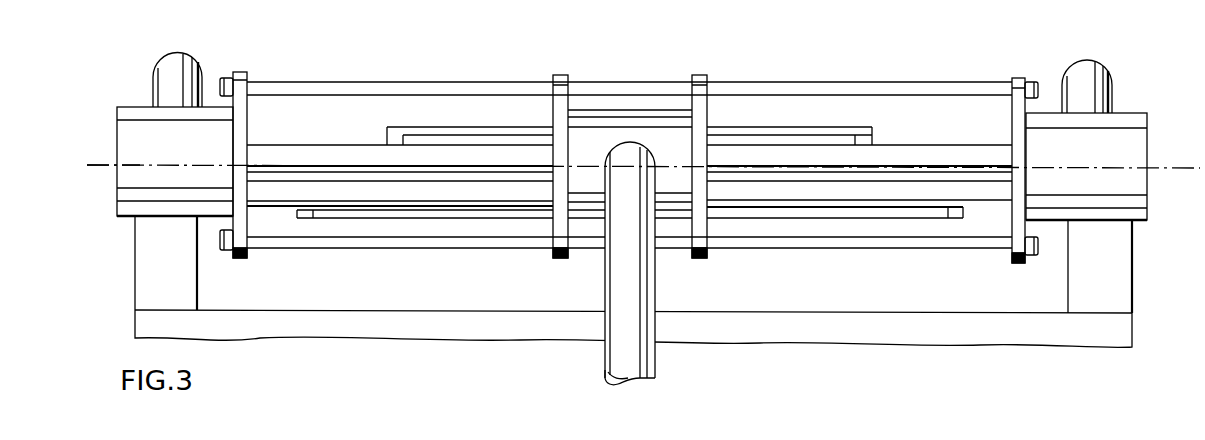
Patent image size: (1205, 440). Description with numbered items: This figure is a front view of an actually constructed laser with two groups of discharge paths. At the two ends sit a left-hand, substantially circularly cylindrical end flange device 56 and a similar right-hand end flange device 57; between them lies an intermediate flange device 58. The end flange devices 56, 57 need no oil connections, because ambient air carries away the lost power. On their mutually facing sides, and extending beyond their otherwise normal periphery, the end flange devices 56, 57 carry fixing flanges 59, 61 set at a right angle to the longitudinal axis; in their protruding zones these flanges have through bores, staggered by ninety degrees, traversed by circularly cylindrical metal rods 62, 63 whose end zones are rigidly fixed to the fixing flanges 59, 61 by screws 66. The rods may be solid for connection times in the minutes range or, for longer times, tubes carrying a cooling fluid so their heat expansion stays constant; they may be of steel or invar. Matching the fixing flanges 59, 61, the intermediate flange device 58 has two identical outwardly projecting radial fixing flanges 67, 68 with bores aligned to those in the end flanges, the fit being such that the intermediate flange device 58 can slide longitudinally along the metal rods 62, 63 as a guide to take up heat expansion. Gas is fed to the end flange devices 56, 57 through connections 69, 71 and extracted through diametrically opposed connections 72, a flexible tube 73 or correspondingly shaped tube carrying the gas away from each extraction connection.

The left-hand end flange device 56 is at (137, 116).
The right-hand end flange device 57 is at (1137, 138).
The intermediate flange device 58 is at (609, 120).
The fixing flange 59 is at (248, 78).
The fixing flange 61 is at (1020, 86).
The metal rod 62 is at (851, 90).
The metal rod 63 is at (898, 250).
The screw 66 is at (233, 78).
The radial fixing flange 67 is at (565, 80).
The radial fixing flange 68 is at (700, 80).
The connection 69 is at (176, 70).
The connection 71 is at (1098, 86).
The connection 72 is at (620, 160).
The flexible tube 73 is at (618, 340).